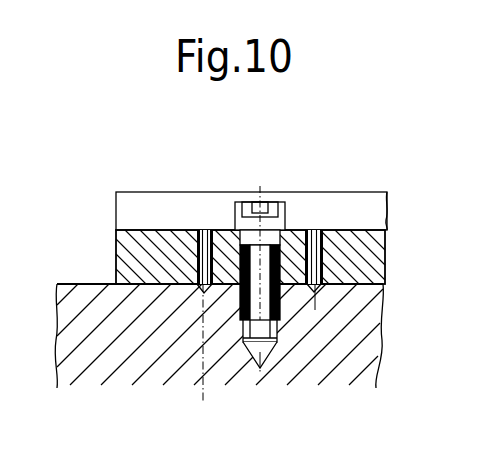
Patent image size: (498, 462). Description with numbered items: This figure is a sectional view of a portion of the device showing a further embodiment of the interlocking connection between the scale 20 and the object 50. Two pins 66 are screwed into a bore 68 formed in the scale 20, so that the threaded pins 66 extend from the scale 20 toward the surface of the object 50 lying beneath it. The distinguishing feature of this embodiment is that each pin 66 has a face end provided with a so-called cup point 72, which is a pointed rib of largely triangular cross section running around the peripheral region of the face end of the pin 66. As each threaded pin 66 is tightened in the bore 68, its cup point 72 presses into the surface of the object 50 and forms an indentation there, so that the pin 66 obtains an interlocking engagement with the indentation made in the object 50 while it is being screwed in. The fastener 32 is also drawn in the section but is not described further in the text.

The scale 20 is at (128, 209).
The fastening screw 32 is at (270, 207).
The object 50 is at (93, 348).
The pin 66 is at (194, 250).
The bore 68 is at (204, 230).
The cup point 72 is at (207, 288).